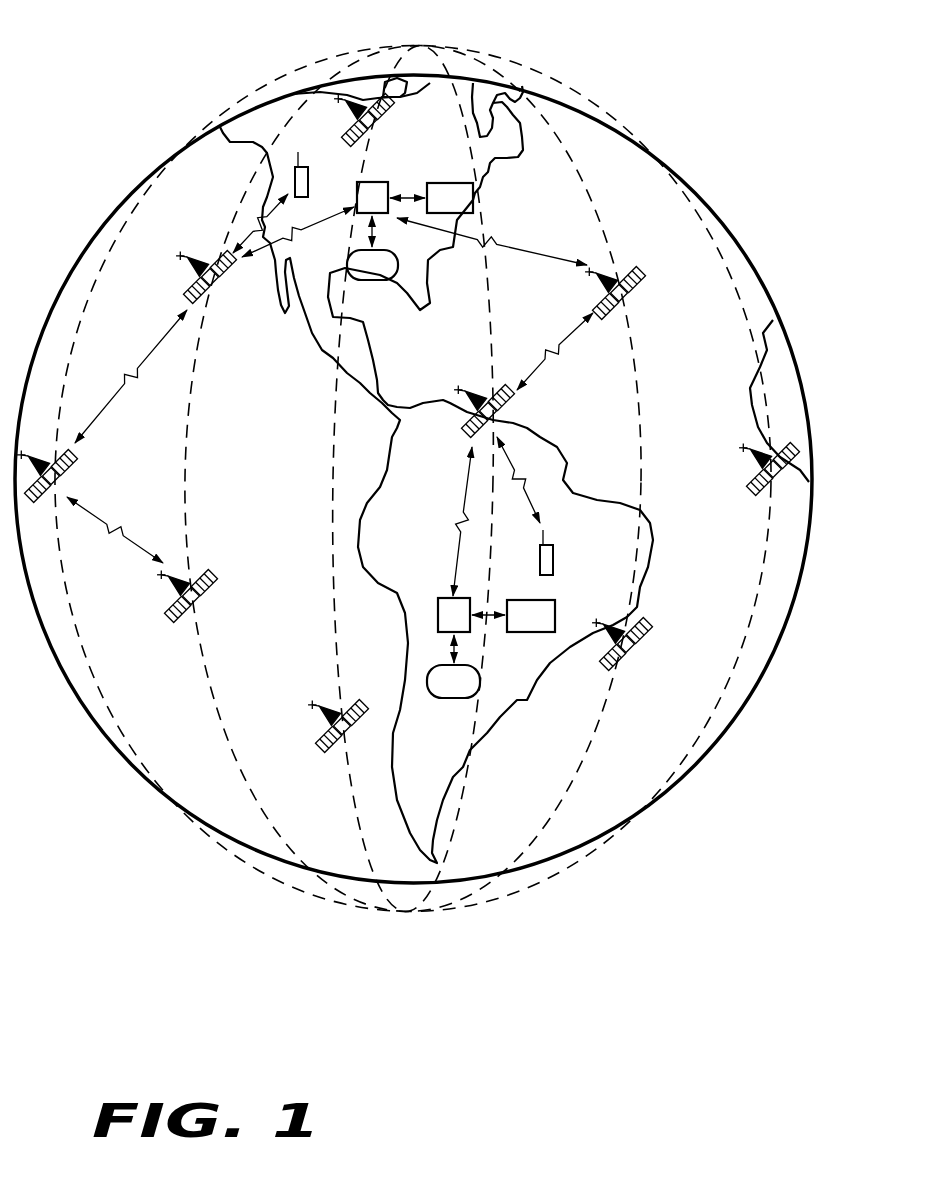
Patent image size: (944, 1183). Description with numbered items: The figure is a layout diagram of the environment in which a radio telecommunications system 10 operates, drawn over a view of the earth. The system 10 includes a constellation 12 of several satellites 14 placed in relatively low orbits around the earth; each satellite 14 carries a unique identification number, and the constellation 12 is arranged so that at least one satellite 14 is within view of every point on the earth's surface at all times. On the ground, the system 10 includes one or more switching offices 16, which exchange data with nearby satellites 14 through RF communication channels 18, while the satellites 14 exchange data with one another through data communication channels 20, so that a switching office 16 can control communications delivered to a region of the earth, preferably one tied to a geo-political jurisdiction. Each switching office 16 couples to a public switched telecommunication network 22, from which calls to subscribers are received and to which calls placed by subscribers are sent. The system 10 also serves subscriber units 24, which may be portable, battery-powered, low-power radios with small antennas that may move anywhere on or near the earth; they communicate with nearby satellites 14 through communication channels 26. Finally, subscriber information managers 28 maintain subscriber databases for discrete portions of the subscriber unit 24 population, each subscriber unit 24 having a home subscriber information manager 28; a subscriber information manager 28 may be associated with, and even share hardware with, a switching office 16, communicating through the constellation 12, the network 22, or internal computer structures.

The radio telecommunications system 10 is at (408, 1027).
The constellation 12 is at (417, 44).
The satellites 14 is at (218, 287).
The switching office 16 is at (378, 182).
The RF communication channels 18 is at (292, 237).
The data communication channels 20 is at (147, 357).
The public switched telecommunication network 22 is at (373, 282).
The subscriber unit 24 is at (308, 166).
The communication channels 26 is at (240, 248).
The subscriber information manager 28 is at (476, 200).